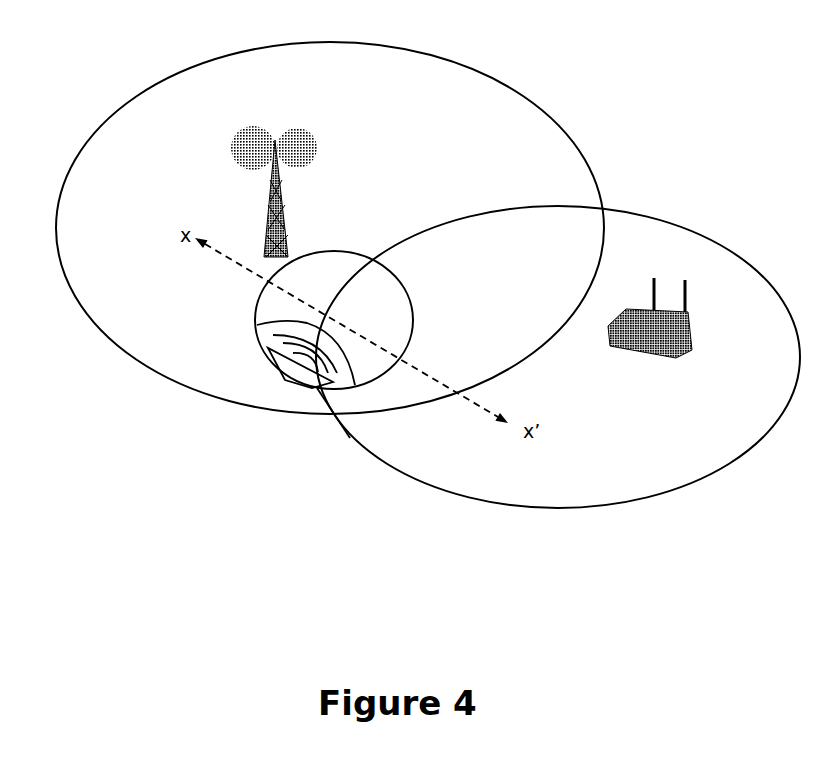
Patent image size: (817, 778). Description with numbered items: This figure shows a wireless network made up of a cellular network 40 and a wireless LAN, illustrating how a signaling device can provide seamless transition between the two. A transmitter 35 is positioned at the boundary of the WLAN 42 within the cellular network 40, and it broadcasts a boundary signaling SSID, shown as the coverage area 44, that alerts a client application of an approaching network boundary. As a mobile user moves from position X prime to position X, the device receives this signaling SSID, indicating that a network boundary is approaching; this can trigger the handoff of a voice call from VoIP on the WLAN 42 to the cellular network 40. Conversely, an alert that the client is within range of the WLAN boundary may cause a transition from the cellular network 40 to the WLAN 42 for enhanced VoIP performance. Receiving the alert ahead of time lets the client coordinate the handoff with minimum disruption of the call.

The cellular network 40 is at (208, 60).
The WLAN #1 network 42 is at (670, 225).
The SSID D coverage area 44 is at (323, 251).
The transmitter 35 is at (293, 378).